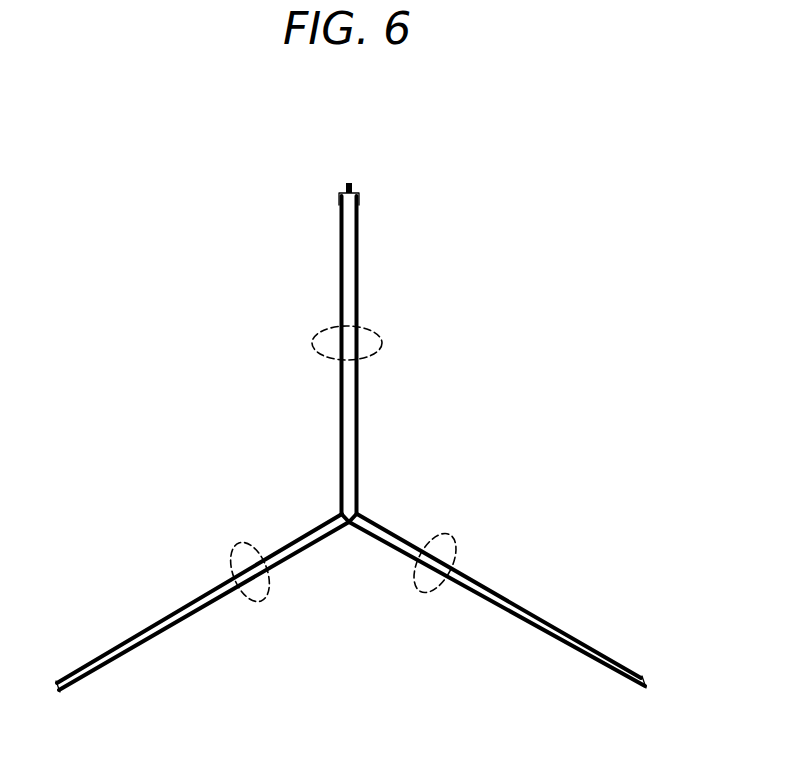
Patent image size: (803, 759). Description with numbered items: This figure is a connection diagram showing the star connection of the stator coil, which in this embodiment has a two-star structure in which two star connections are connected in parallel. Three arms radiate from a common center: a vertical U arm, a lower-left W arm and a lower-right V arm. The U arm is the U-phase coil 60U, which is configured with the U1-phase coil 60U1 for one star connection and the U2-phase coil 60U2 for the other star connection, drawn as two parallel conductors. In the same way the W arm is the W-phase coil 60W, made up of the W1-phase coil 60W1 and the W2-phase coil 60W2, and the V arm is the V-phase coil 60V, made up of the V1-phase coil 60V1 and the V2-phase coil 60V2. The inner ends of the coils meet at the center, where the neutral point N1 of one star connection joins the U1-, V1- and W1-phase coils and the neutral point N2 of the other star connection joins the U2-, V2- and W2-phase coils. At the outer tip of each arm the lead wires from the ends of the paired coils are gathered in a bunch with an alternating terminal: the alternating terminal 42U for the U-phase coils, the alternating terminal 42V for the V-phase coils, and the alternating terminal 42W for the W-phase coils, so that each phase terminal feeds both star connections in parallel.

The alternating terminal 42U is at (356, 178).
The alternating terminal 42V is at (643, 680).
The alternating terminal 42W is at (58, 685).
The U-phase coil 60U is at (378, 333).
The U1-phase coil 60U1 is at (339, 265).
The U2-phase coil 60U2 is at (359, 283).
The V-phase coil 60V is at (420, 595).
The V1-phase coil 60V1 is at (515, 618).
The V2-phase coil 60V2 is at (530, 608).
The W-phase coil 60W is at (262, 603).
The W1-phase coil 60W1 is at (172, 617).
The W2-phase coil 60W2 is at (166, 640).
The neutral point N1 is at (342, 515).
The neutral point N2 is at (357, 515).